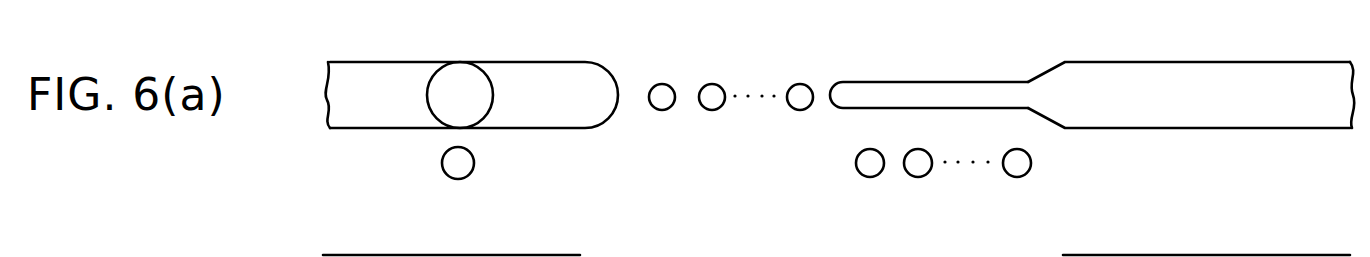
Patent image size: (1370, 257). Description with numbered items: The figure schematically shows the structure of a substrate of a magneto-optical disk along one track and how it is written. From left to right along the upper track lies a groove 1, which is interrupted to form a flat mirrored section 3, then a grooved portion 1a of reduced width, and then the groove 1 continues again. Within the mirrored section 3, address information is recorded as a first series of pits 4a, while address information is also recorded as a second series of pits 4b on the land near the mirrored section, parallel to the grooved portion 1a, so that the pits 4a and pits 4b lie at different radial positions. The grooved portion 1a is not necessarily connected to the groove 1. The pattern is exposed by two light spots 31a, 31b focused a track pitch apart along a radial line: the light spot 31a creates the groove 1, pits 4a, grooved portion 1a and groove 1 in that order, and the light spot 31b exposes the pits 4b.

The groove 1 is at (840, 68).
The grooved portion 1a is at (910, 90).
The mirrored section 3 is at (742, 65).
The pits 4a is at (712, 83).
The pits 4b is at (870, 177).
The light spot 31a is at (492, 83).
The light spot 31b is at (470, 172).